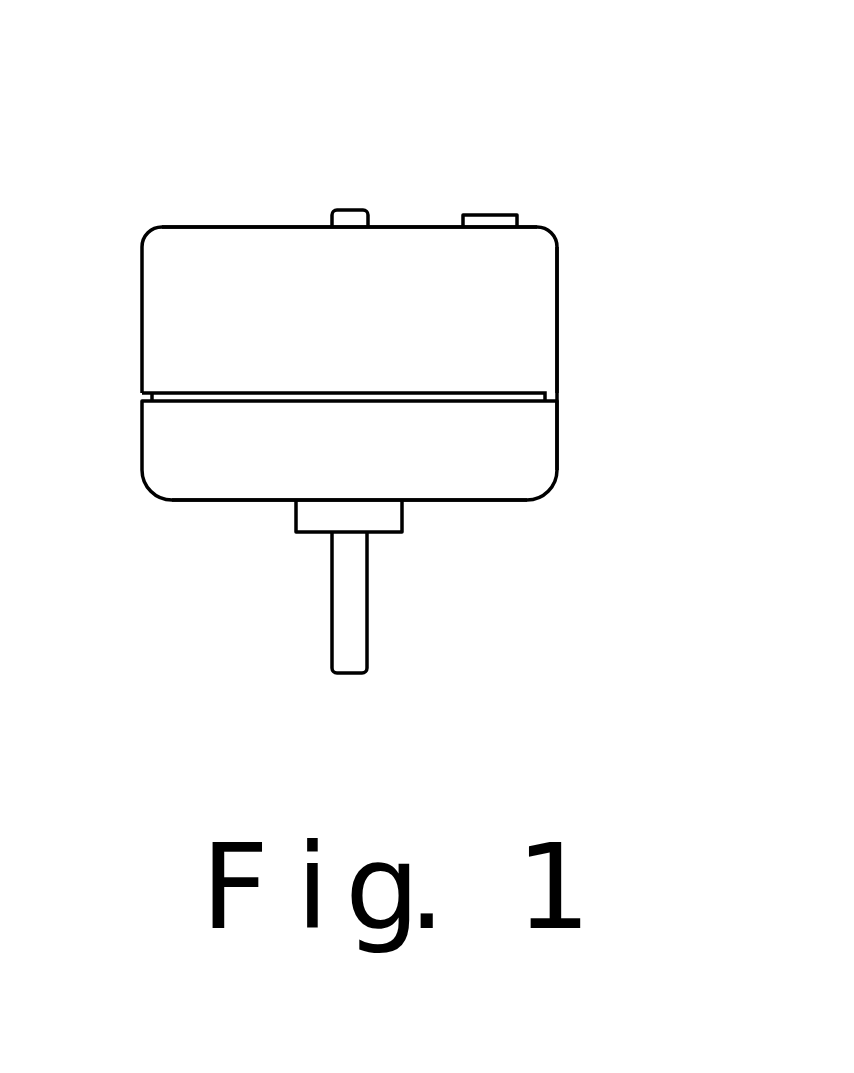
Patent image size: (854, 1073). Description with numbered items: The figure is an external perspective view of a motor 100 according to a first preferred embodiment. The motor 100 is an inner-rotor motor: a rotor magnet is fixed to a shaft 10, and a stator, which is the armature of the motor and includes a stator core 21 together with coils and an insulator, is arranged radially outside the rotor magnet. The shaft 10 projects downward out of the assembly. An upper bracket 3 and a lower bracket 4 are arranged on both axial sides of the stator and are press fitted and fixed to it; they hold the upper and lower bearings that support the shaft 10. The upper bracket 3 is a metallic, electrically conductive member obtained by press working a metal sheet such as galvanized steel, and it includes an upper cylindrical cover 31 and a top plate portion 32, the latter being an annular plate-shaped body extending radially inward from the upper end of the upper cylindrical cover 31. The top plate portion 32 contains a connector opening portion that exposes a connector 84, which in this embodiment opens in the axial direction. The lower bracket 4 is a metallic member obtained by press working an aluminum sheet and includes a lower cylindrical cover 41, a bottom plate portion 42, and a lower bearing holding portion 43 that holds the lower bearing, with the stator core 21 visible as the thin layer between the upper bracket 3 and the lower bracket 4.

The motor 100 is at (148, 68).
The upper bracket 3 is at (480, 318).
The upper cylindrical cover 31 is at (548, 264).
The top plate portion 32 is at (218, 226).
The connector 84 is at (503, 222).
The stator core 21 is at (545, 398).
The lower bracket 4 is at (508, 426).
The lower cylindrical cover 41 is at (558, 457).
The bottom plate portion 42 is at (458, 503).
The lower bearing holding portion 43 is at (329, 519).
The shaft 10 is at (348, 656).